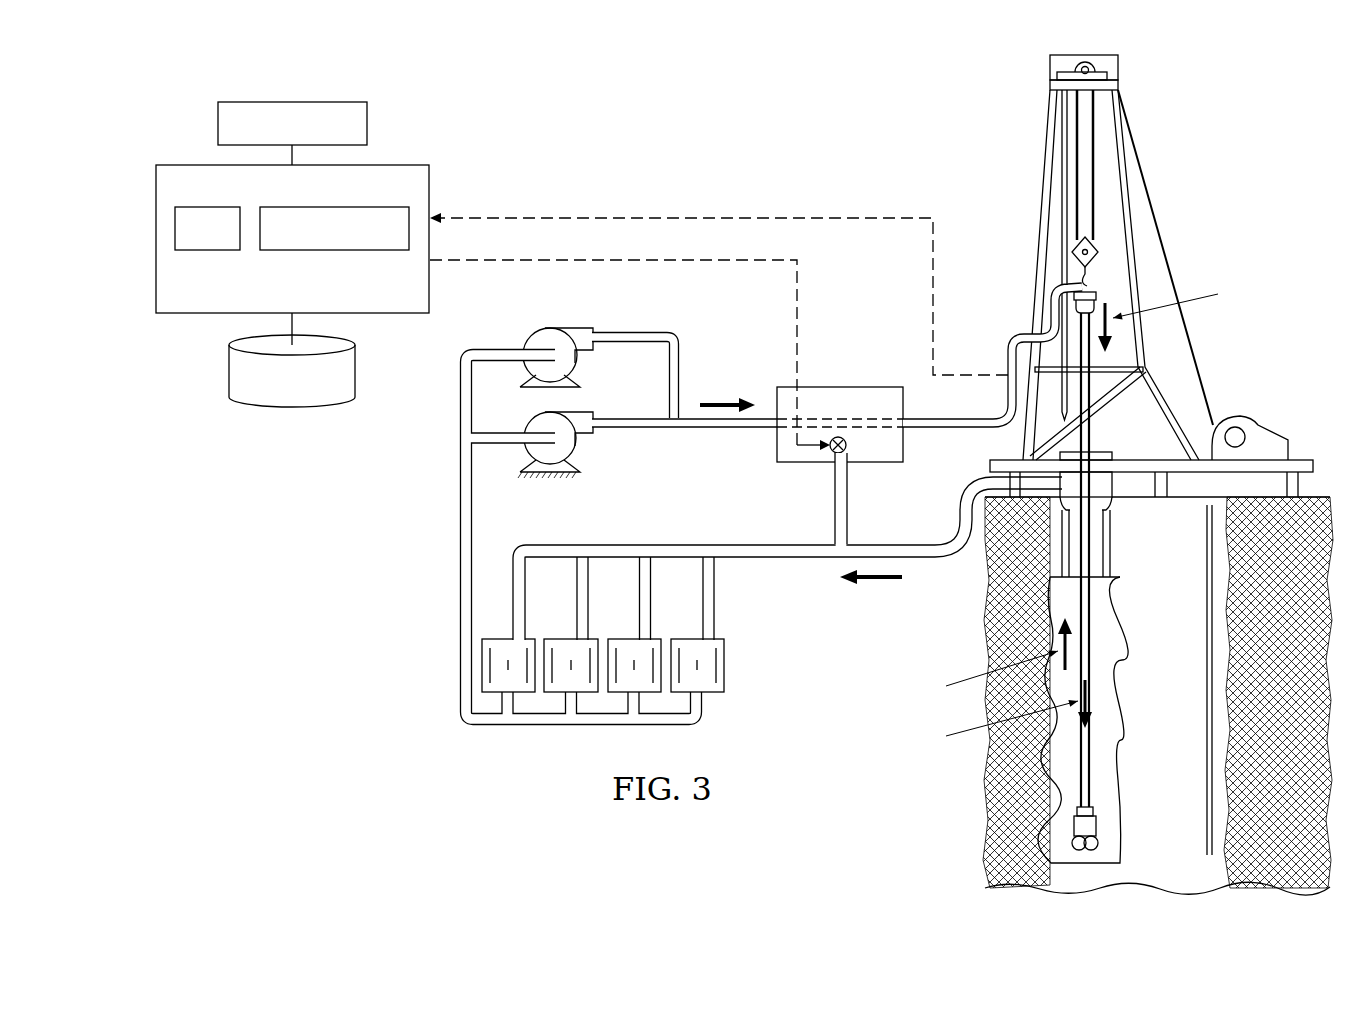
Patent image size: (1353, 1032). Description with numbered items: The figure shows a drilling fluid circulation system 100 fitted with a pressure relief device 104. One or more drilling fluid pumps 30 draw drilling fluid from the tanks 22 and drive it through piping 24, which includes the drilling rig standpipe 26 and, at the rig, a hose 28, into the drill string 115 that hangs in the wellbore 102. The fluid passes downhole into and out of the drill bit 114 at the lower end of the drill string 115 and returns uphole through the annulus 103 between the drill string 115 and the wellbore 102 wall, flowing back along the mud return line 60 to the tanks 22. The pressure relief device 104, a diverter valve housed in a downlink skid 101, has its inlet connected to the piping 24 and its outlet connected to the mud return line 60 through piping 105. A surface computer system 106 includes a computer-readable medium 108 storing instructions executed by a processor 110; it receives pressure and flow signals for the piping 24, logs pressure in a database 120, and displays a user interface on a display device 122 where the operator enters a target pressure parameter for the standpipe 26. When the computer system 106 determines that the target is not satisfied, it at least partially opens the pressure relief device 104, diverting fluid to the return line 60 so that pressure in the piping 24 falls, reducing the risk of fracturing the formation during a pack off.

The tanks 22 is at (727, 663).
The piping 24 is at (722, 430).
The drilling rig standpipe 26 is at (1014, 356).
The rotary hose 28 is at (1050, 300).
The drilling fluid pump 30 is at (548, 328).
The mud return line 60 is at (924, 560).
The drilling fluid circulation system 100 is at (740, 472).
The downlink skid 101 is at (857, 386).
The wellbore 102 is at (1121, 590).
The annulus 103 is at (1118, 630).
The pressure relief device 104 is at (850, 452).
The piping 105 is at (833, 504).
The computer system 106 is at (195, 162).
The computer-readable medium 108 is at (205, 252).
The processor 110 is at (338, 252).
The drill bit 114 is at (1100, 830).
The drill string 115 is at (1212, 675).
The database 120 is at (228, 374).
The display device 122 is at (280, 100).